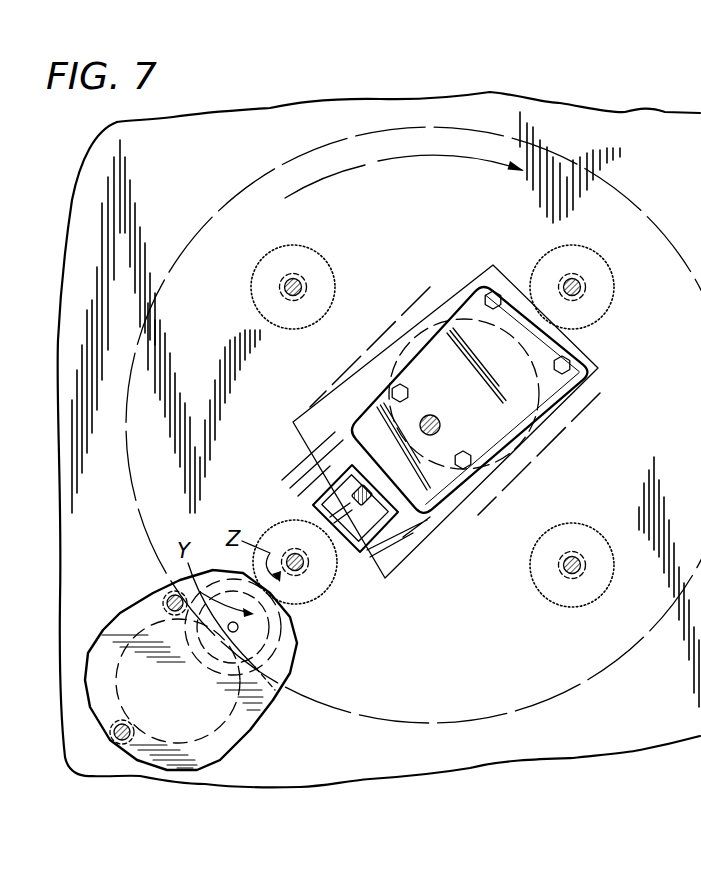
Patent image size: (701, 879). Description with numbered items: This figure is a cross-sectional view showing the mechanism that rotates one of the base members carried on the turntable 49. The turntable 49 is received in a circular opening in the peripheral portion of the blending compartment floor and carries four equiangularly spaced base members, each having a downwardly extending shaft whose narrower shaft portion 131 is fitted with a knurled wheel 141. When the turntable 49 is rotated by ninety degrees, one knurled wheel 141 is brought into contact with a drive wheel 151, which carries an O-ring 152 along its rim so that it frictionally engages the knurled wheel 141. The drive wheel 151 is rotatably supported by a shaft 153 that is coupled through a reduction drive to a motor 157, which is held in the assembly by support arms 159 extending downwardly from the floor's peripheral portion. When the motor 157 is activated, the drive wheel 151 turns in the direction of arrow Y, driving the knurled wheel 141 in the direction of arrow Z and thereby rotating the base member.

The turntable 49 is at (517, 700).
The narrower shaft portion 131 is at (301, 270).
The knurled wheel 141 is at (293, 329).
The drive wheel 151 is at (182, 652).
The O-ring 152 is at (178, 681).
The shaft 153 is at (240, 629).
The motor 157 is at (248, 746).
The support arm 159 is at (167, 601).